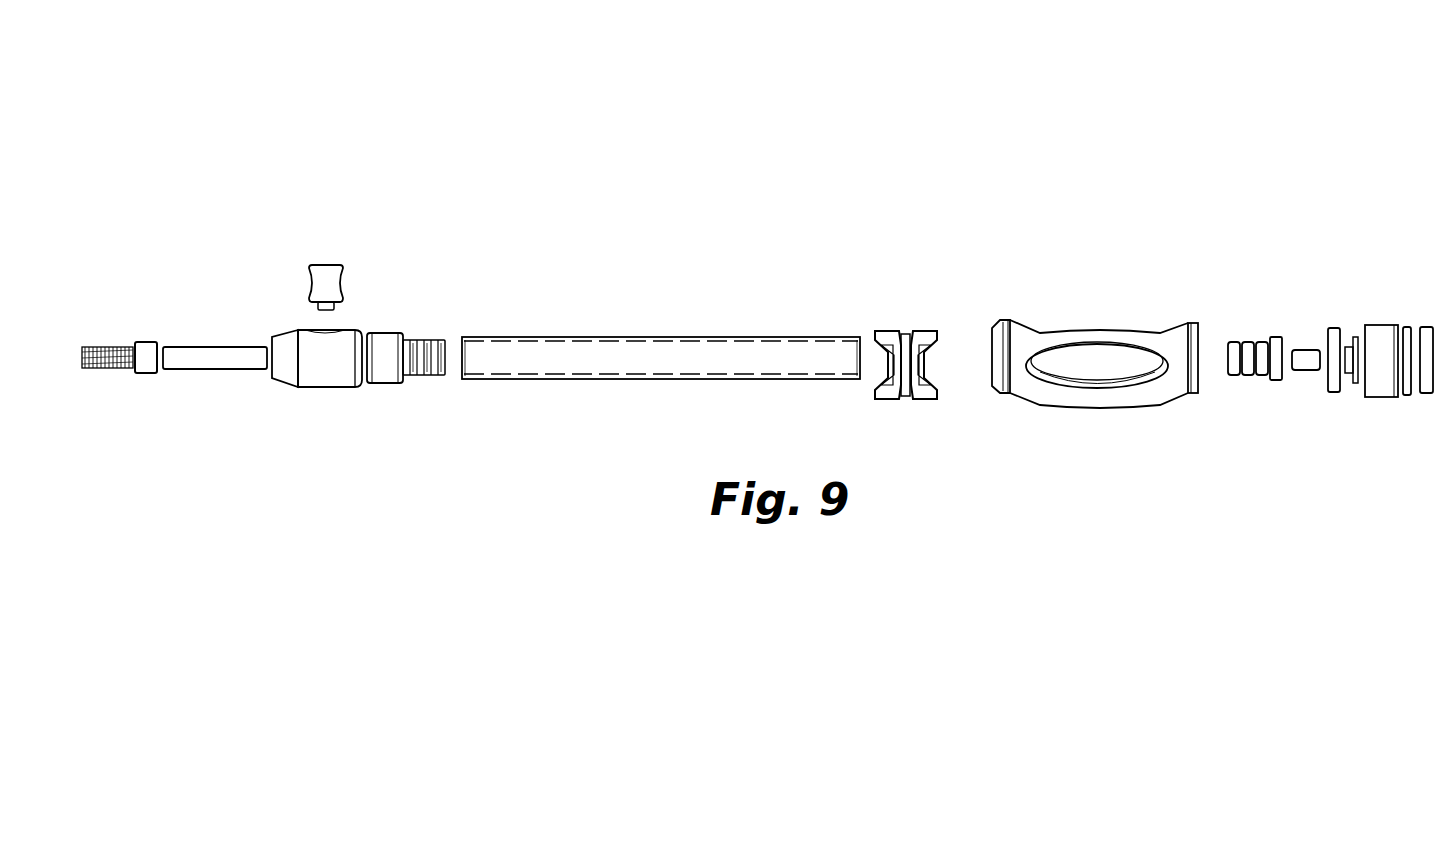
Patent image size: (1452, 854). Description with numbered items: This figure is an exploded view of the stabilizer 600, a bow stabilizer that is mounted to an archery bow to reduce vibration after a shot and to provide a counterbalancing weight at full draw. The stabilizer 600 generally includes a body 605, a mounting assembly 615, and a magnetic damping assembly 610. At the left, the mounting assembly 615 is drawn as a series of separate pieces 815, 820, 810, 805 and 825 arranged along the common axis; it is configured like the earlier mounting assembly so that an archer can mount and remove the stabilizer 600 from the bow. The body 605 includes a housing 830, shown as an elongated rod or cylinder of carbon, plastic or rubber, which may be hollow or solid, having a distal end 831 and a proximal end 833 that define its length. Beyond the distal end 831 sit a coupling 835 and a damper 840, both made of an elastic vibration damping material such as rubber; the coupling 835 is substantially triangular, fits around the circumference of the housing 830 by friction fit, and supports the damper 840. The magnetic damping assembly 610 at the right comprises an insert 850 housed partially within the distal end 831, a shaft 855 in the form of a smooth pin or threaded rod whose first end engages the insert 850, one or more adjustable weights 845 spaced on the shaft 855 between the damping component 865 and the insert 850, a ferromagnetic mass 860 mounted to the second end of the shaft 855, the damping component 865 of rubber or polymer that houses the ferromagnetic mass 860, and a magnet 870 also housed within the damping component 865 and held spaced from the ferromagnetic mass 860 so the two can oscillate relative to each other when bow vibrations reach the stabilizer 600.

The stabilizer 600 is at (1033, 124).
The body 605 is at (712, 222).
The magnetic damping assembly 610 is at (1388, 243).
The mounting assembly 615 is at (265, 248).
The button 805 is at (344, 266).
The connector body 810 is at (320, 388).
The screw 815 is at (120, 370).
The pin 820 is at (185, 348).
The coupling insert 825 is at (396, 332).
The housing 830 is at (615, 337).
The distal end 831 is at (843, 322).
The proximal end 833 is at (481, 392).
The coupling 835 is at (928, 328).
The damper 840 is at (1077, 326).
The weights 845 is at (1336, 395).
The insert 850 is at (1252, 380).
The shaft 855 is at (1302, 350).
The ferromagnetic mass 860 is at (1350, 337).
The damping component 865 is at (1392, 398).
The magnet 870 is at (1425, 327).